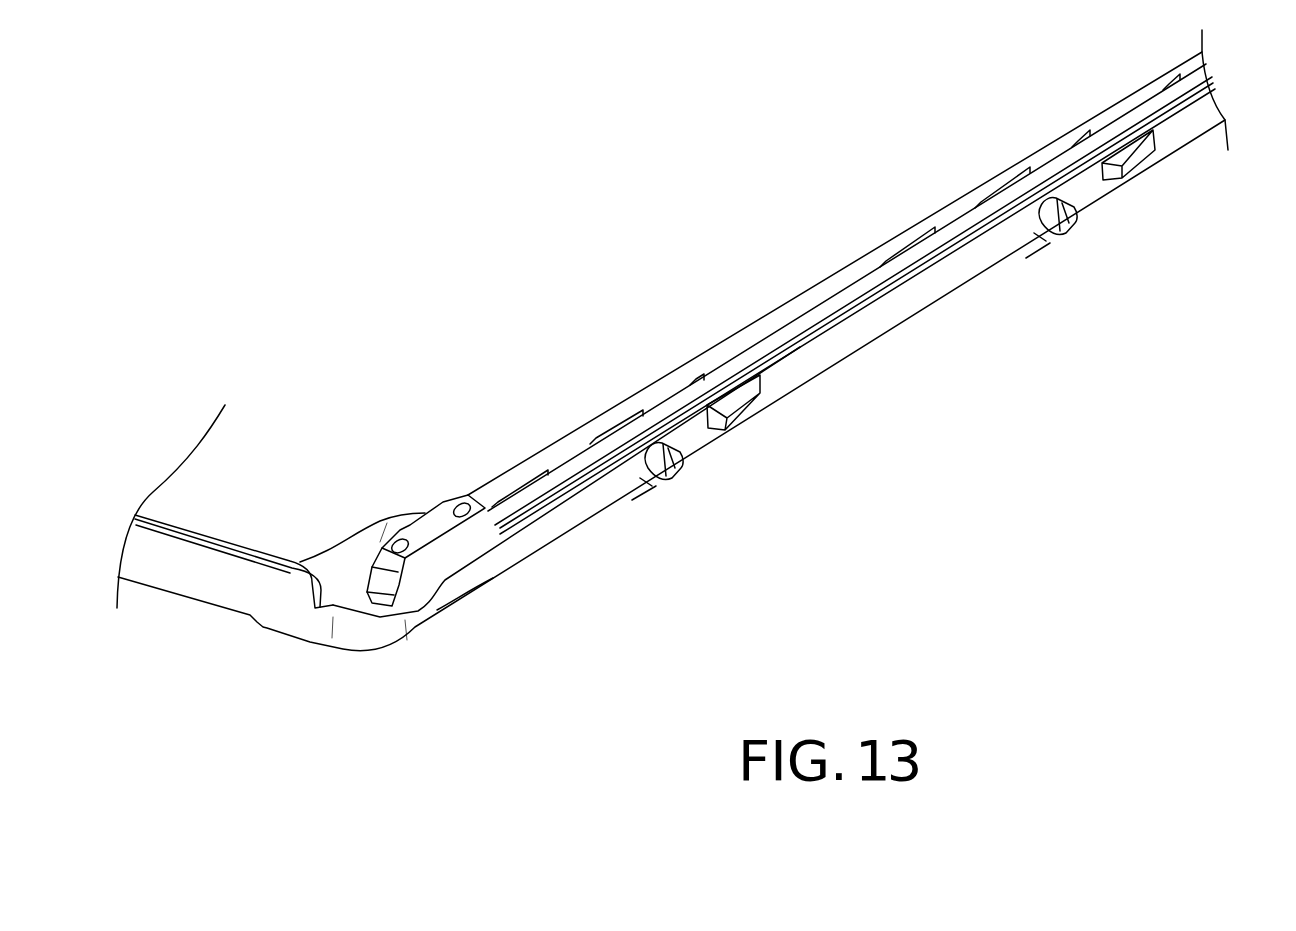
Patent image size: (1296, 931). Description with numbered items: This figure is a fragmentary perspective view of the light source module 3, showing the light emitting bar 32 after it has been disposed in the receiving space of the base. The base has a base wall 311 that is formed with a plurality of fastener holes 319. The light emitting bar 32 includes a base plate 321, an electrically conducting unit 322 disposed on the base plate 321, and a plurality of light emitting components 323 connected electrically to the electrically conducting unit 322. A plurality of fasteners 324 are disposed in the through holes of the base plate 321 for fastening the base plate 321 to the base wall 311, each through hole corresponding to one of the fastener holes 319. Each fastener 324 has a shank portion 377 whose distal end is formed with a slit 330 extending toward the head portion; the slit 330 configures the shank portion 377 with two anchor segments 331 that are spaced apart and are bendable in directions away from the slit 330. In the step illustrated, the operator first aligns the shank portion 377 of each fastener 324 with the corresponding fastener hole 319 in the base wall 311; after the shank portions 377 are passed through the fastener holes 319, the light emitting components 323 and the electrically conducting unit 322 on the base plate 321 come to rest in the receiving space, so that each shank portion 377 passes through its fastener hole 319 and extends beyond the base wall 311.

The light source module 3 is at (686, 386).
The light emitting bar 32 is at (430, 482).
The base plate 321 is at (400, 603).
The electrically conducting unit 322 is at (566, 458).
The light emitting components 323 is at (697, 367).
The fasteners 324 is at (711, 466).
The base wall 311 is at (905, 305).
The fastener holes 319 is at (645, 476).
The slit 330 is at (683, 463).
The anchor segments 331 is at (668, 478).
The shank portion 377 is at (644, 512).